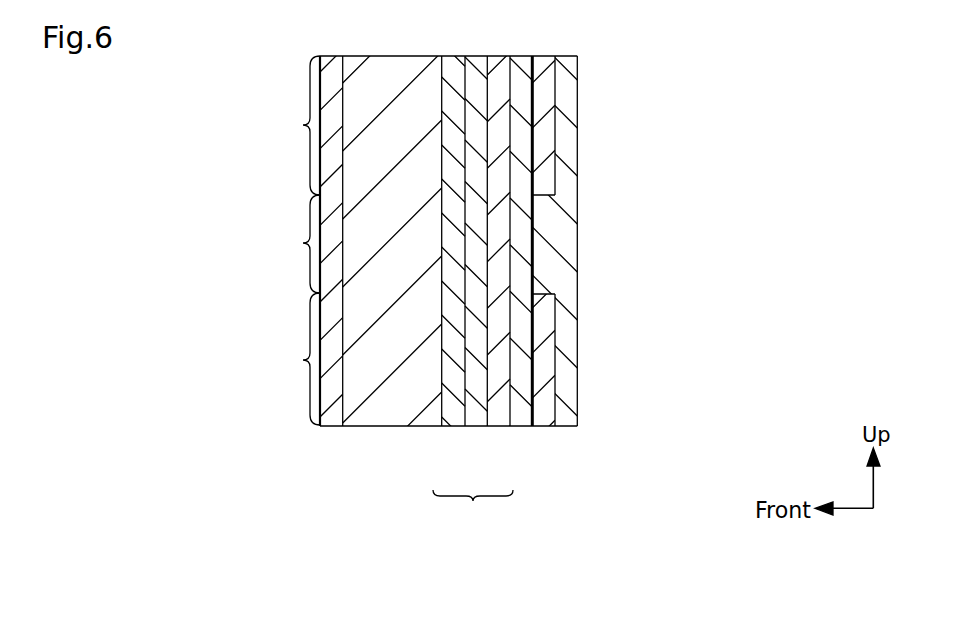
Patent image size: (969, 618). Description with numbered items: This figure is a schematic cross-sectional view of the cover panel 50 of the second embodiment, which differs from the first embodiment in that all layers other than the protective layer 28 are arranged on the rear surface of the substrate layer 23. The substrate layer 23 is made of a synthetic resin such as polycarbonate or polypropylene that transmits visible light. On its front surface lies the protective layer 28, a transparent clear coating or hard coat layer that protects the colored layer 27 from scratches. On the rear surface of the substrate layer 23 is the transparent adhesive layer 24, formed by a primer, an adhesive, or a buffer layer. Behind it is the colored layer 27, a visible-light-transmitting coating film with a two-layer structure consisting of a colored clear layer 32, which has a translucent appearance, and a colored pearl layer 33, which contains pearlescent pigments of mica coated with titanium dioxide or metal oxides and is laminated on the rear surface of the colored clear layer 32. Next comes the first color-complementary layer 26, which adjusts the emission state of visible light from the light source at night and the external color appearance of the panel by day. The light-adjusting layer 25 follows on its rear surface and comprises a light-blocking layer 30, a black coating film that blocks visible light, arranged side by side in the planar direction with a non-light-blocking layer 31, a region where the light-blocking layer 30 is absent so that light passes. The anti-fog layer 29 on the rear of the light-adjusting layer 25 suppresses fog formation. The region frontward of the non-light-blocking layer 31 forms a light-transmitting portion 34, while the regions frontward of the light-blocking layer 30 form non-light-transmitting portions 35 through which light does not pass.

The cover panel 50 is at (507, 267).
The protective layer 28 is at (331, 427).
The substrate layer 23 is at (382, 417).
The adhesive layer 24 is at (453, 413).
The colored layer 27 is at (473, 293).
The colored clear layer 32 is at (475, 420).
The colored pearl layer 33 is at (500, 420).
The light-adjusting layer 25 is at (568, 277).
The first color-complementary layer 26 is at (522, 418).
The light-blocking layer 30 is at (543, 62).
The non-light-blocking layer 31 is at (543, 210).
The anti-fog layer 29 is at (567, 418).
The light-transmitting portion 34 is at (295, 244).
The non-light-transmitting portion 35 is at (295, 240).